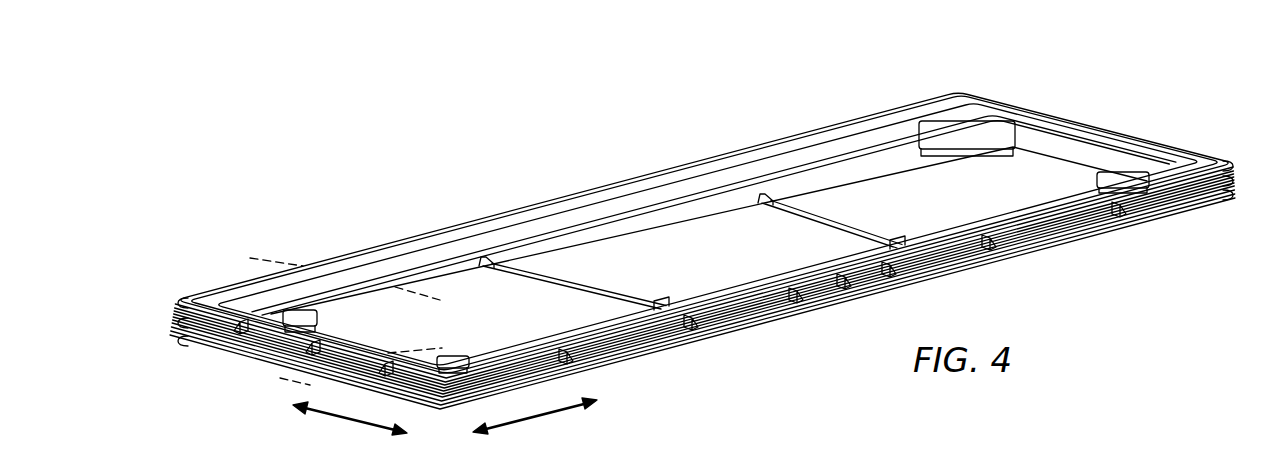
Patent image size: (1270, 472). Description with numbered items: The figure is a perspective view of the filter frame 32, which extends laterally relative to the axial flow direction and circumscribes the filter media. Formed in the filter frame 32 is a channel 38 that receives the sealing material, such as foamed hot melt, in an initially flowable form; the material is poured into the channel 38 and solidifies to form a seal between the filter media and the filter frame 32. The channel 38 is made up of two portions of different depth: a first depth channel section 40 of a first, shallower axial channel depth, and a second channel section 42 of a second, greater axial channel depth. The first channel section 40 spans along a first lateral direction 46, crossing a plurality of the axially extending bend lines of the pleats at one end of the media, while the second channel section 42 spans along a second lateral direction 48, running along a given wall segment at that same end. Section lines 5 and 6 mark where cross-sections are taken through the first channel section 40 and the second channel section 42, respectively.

The filter frame 32 is at (178, 300).
The channel 38 is at (430, 268).
The first depth channel section 40 is at (786, 148).
The second channel section 42 is at (1058, 132).
The first lateral direction 46 is at (549, 413).
The second lateral direction 48 is at (336, 414).
The section line 5- 5 is at (292, 247).
The section line 6- 6 is at (450, 343).